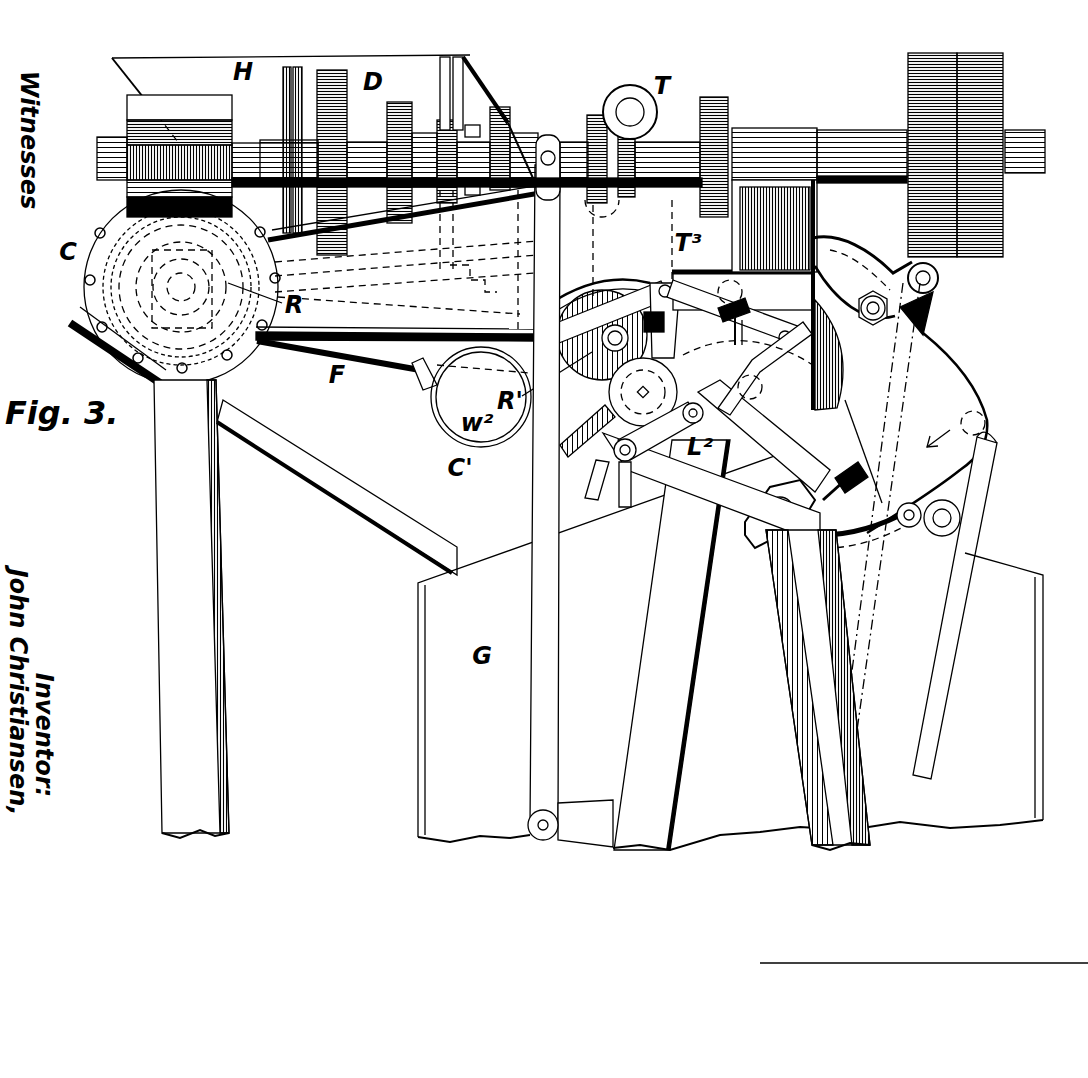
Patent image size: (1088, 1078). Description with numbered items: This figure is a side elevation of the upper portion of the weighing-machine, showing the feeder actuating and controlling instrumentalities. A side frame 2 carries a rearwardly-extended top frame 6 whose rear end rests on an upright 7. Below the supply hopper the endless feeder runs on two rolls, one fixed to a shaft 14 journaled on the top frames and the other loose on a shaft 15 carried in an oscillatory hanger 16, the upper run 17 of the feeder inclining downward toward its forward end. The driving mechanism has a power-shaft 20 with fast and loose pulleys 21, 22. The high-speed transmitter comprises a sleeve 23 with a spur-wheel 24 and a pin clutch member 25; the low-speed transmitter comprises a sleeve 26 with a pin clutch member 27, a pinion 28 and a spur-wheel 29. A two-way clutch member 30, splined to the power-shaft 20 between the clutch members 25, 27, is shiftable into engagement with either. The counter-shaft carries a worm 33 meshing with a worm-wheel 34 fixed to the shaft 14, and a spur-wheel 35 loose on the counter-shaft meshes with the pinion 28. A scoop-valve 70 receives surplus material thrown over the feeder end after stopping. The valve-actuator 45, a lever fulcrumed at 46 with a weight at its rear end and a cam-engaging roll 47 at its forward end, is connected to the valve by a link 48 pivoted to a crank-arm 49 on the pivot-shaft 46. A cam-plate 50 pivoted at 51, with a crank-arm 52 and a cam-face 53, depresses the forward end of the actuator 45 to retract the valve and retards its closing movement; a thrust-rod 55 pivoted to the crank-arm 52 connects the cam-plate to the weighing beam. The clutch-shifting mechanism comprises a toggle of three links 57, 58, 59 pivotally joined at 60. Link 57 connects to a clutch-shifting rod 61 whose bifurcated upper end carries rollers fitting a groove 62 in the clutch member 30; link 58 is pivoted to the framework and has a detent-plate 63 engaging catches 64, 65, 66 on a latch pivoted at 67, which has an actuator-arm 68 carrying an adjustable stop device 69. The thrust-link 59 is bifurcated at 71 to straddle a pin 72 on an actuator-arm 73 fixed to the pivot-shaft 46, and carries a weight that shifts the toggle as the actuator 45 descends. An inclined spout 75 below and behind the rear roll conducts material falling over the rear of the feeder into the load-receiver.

The side frame 2 is at (802, 703).
The top frame 6 is at (808, 225).
The upright 7 is at (216, 689).
The shaft 14 is at (172, 293).
The shaft 15 is at (618, 325).
The oscillatory hanger 16 is at (600, 115).
The upper run 17 is at (472, 262).
The power-shaft 20 is at (97, 158).
The fast pulley 21 is at (912, 112).
The loose pulley 22 is at (1003, 105).
The sleeve 23 is at (665, 148).
The spur-wheel 24 is at (728, 110).
The pin clutch member 25 is at (627, 110).
The sleeve 26 is at (404, 125).
The pin clutch member 27 is at (470, 100).
The pinion 28 is at (340, 150).
The spur-wheel 29 is at (420, 224).
The two-way clutch member 30 is at (505, 125).
The worm 33 is at (178, 125).
The worm-wheel 34 is at (112, 292).
The spur-wheel 35 is at (317, 108).
The valve-actuator 45 is at (588, 440).
The pivot-shaft 46 is at (765, 515).
The roller 47 is at (932, 504).
The link 48 is at (748, 372).
The crank-arm 49 is at (789, 408).
The cam-plate 50 is at (927, 433).
The pivot 51 is at (874, 322).
The crank-arm 52 is at (938, 278).
The cam-face 53 is at (980, 470).
The thrust-rod 55 is at (925, 318).
The toggle-link 57 is at (612, 300).
The toggle-link 58 is at (705, 290).
The thrust-link 59 is at (620, 400).
The pivot connection 60 is at (665, 285).
The clutch-shifting rod 61 is at (538, 470).
The groove 62 is at (548, 148).
The detent-plate 63 is at (745, 290).
The catch 64 is at (720, 320).
The catch 65 is at (705, 339).
The catch 66 is at (706, 349).
The pivot 67 is at (673, 426).
The actuator-arm 68 is at (805, 475).
The adjustable stop device 69 is at (845, 480).
The scoop-valve 70 is at (845, 381).
The bifurcation 71 is at (598, 496).
The pin 72 is at (613, 455).
The actuator-arm 73 is at (705, 492).
The spout 75 is at (357, 510).